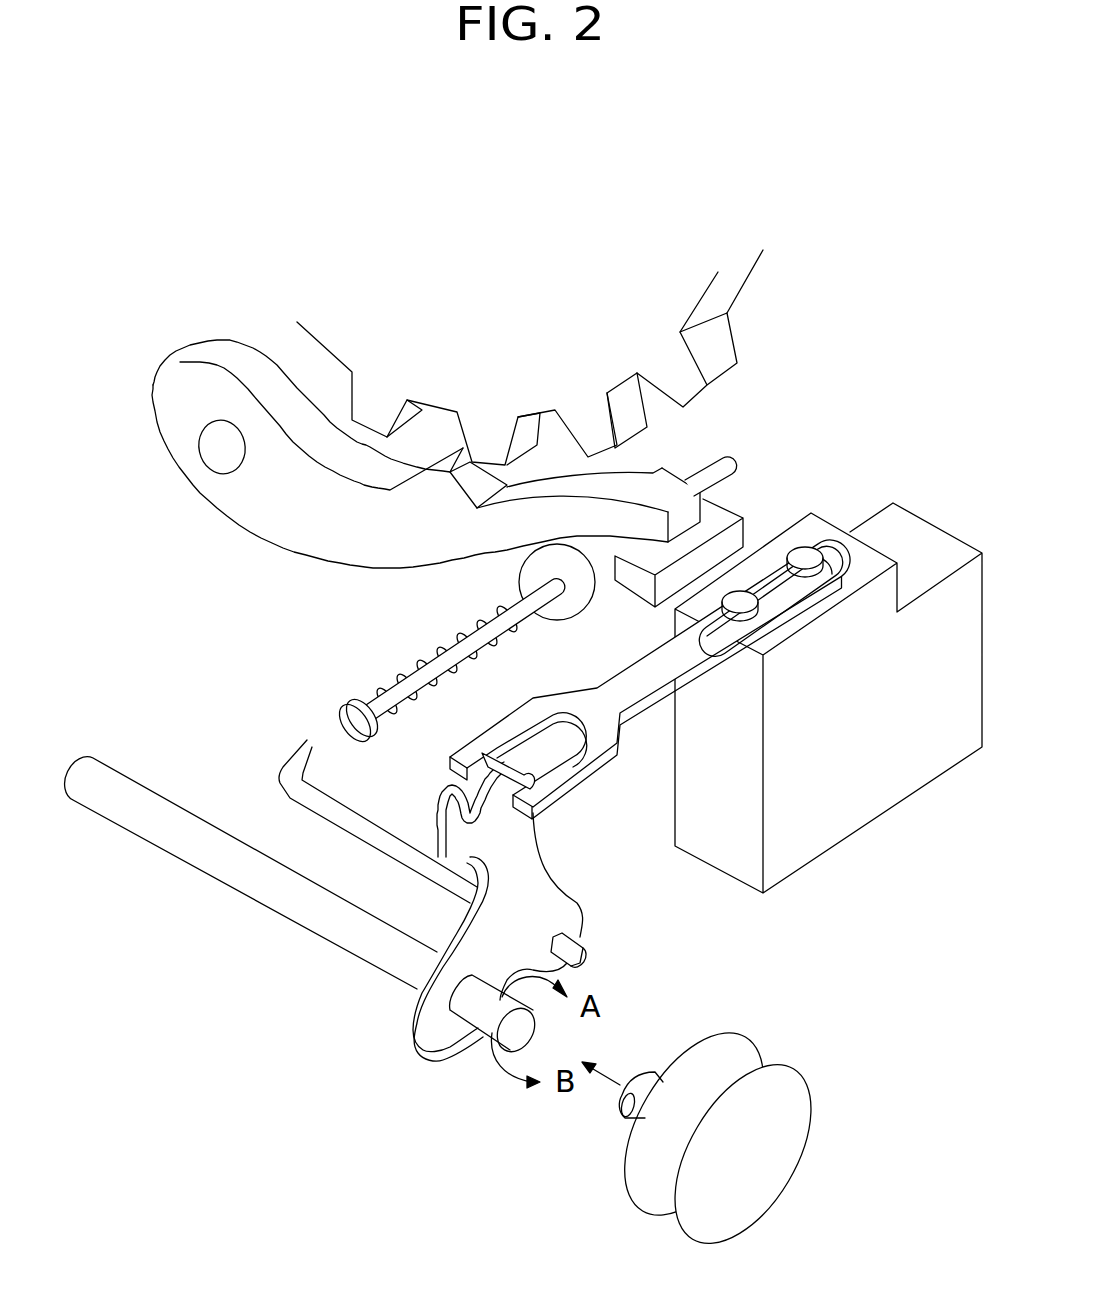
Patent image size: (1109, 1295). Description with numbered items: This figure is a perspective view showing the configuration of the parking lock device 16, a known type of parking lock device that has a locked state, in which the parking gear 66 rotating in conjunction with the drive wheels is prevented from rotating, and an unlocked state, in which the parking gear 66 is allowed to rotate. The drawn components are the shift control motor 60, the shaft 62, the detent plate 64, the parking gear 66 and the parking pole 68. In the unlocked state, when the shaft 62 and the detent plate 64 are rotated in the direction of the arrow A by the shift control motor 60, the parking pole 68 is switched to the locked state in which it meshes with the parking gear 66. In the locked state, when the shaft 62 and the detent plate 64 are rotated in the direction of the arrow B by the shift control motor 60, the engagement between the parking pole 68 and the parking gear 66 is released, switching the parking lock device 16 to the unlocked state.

The parking lock device 16 is at (857, 198).
The shift control motor 60 is at (740, 1058).
The shaft 62 is at (305, 918).
The detent plate 64 is at (568, 908).
The parking gear 66 is at (702, 272).
The parking pole 68 is at (235, 502).